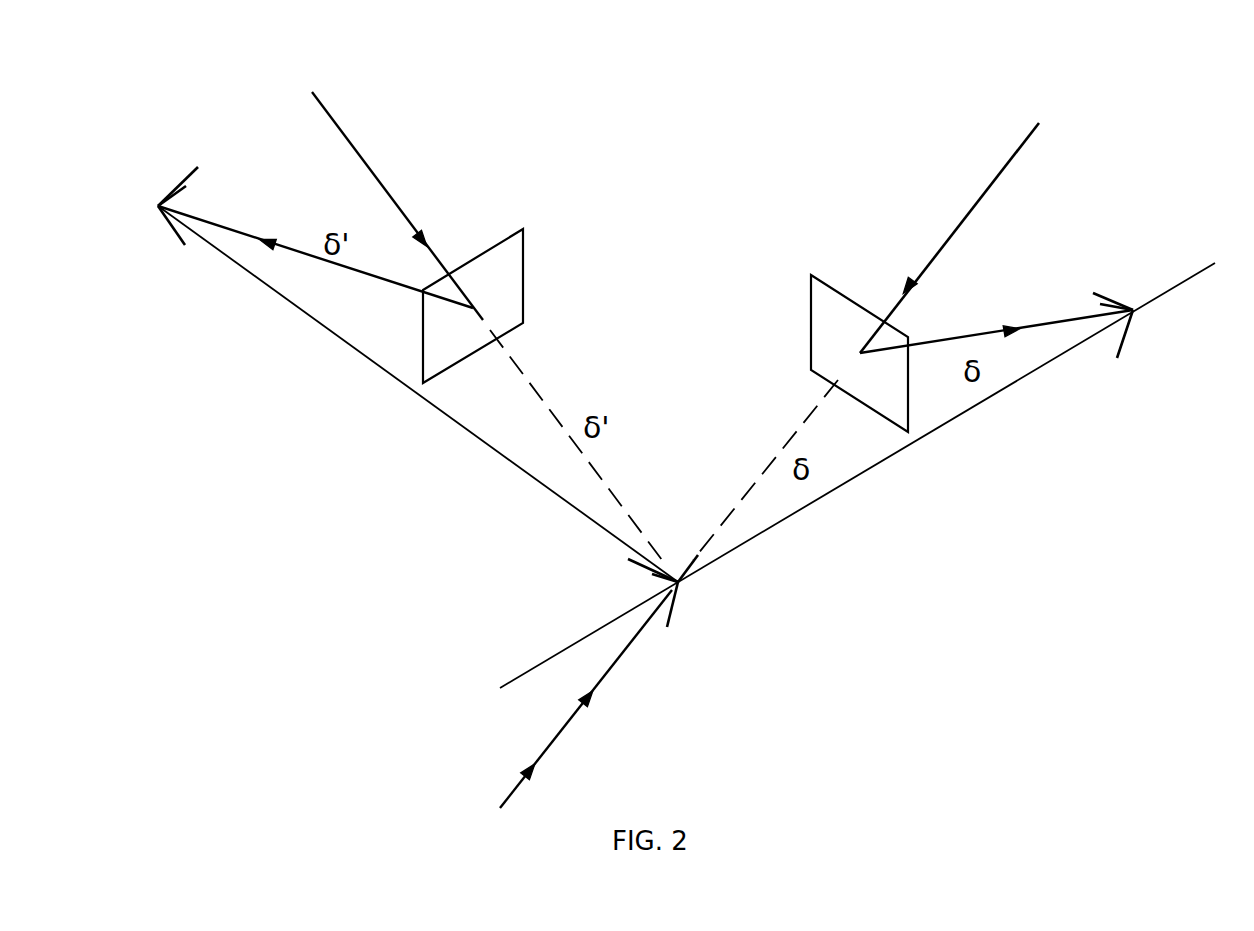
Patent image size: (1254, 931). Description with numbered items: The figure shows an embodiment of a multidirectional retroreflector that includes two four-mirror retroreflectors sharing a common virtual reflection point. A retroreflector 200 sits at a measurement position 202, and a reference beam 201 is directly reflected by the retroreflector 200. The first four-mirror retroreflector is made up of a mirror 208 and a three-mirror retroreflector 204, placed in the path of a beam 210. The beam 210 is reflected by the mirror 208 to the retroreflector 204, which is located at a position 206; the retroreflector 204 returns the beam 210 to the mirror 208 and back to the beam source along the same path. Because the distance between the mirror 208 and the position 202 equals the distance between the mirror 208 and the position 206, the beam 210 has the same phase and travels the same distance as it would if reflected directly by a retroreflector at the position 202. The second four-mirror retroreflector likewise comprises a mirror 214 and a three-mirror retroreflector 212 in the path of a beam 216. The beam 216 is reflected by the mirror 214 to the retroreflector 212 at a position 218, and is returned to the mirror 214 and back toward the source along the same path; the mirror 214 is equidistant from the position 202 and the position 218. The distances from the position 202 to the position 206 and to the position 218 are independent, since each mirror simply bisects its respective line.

The retroreflector 200 is at (680, 592).
The reference beam 201 is at (558, 737).
The measurement position 202 is at (672, 583).
The three-mirror retroreflector 204 is at (1132, 327).
The position 206 is at (1125, 309).
The mirror 208 is at (903, 333).
The beam 210 is at (1030, 141).
The three-mirror retroreflector 212 is at (175, 234).
The mirror 214 is at (490, 247).
The beam 216 is at (343, 128).
The position 218 is at (165, 206).